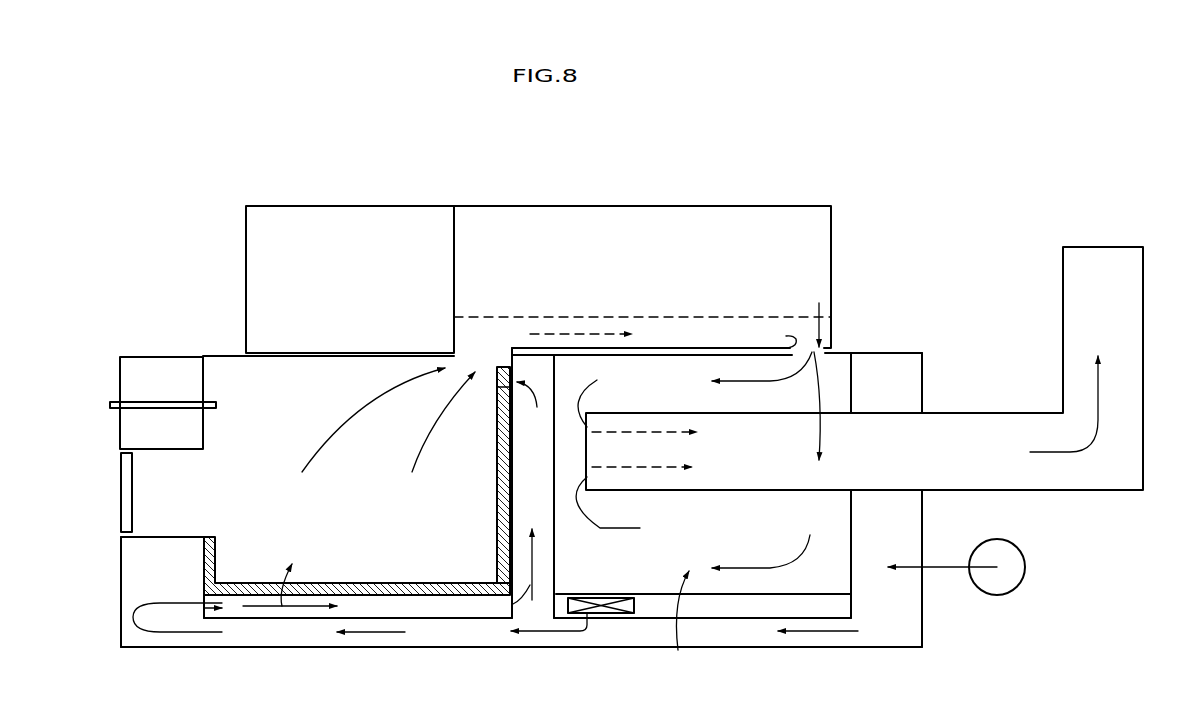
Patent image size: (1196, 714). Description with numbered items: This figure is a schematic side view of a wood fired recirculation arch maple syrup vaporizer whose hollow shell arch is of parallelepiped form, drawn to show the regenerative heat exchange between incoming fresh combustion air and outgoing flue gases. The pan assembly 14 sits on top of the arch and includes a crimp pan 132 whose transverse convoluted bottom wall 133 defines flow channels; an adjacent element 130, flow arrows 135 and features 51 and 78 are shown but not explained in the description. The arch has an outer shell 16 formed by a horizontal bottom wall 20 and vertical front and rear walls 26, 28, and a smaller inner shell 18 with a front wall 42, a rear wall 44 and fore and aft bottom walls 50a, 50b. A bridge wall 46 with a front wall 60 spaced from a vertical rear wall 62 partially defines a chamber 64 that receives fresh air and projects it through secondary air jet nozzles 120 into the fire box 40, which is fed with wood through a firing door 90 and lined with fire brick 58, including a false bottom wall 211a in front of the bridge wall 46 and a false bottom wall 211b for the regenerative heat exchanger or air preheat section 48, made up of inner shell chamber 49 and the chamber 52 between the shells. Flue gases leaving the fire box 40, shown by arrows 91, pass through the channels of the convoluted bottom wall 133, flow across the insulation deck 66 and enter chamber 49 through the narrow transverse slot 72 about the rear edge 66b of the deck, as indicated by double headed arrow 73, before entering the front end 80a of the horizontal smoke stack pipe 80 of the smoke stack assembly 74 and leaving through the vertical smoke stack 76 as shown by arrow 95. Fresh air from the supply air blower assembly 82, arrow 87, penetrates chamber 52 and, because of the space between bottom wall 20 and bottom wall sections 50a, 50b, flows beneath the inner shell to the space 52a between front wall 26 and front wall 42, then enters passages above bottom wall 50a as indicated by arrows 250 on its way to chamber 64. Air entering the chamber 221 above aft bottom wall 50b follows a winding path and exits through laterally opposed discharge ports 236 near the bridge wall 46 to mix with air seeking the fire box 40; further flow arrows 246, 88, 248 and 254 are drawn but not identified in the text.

The pan assembly 14 is at (844, 218).
The upper compartment 130 is at (360, 205).
The crimp pan 132 is at (655, 186).
The transverse convoluted bottom wall 133 is at (597, 317).
The air flow 135 is at (685, 330).
The narrow transverse slot 72 is at (813, 314).
The insulation deck 66 is at (690, 358).
The rear edge of insulated deck 66b is at (780, 337).
The double headed arrow 73 is at (813, 391).
The inner shell 18 is at (856, 400).
The outer shell 16 is at (926, 400).
The horizontal smoke stack pipe 80 is at (769, 458).
The vertical smoke stack 76 is at (1143, 356).
The arrow 95 is at (1100, 395).
The smoke stack assembly 74 is at (1148, 484).
The flue bottom 78 is at (1113, 483).
The control box 51 is at (160, 357).
The front wall of inner shell 42 is at (203, 428).
The firing door 90 is at (121, 480).
The front wall of outer shell 26 is at (119, 571).
The bottom wall of outer shell 20 is at (448, 642).
The rear wall of outer shell 28 is at (922, 545).
The space between front walls 52a is at (176, 574).
The fire brick 58 is at (213, 545).
The front wall of bridge wall 60 is at (504, 471).
The secondary air jet nozzles 120 is at (498, 384).
The arrows 91 is at (407, 388).
The fire box 40 is at (361, 474).
The chamber 64 is at (540, 451).
The bridge wall 46 is at (557, 567).
The rear wall of bridge wall 62 is at (557, 397).
The front end of smoke stack pipe 80a is at (582, 450).
The inner shell regenerative heat exchange chamber 49 is at (774, 529).
The rear wall of inner shell 44 is at (851, 545).
The chamber between shells 52 is at (890, 623).
The supply air blower assembly 82 is at (1012, 540).
The arrow 87 is at (960, 568).
The aft bottom wall 50b is at (648, 618).
The discharge ports 236 is at (600, 615).
The air flow 246 is at (517, 640).
The regenerative heat exchanger 48 is at (676, 628).
The false bottom wall 211b is at (652, 598).
The chamber 221 is at (757, 607).
The air flow 88 is at (783, 635).
The fore bottom wall 50a is at (287, 622).
The return flow 248 is at (196, 634).
The arrows 250 is at (340, 609).
The air flow 254 is at (294, 563).
The false bottom wall 211a is at (258, 588).